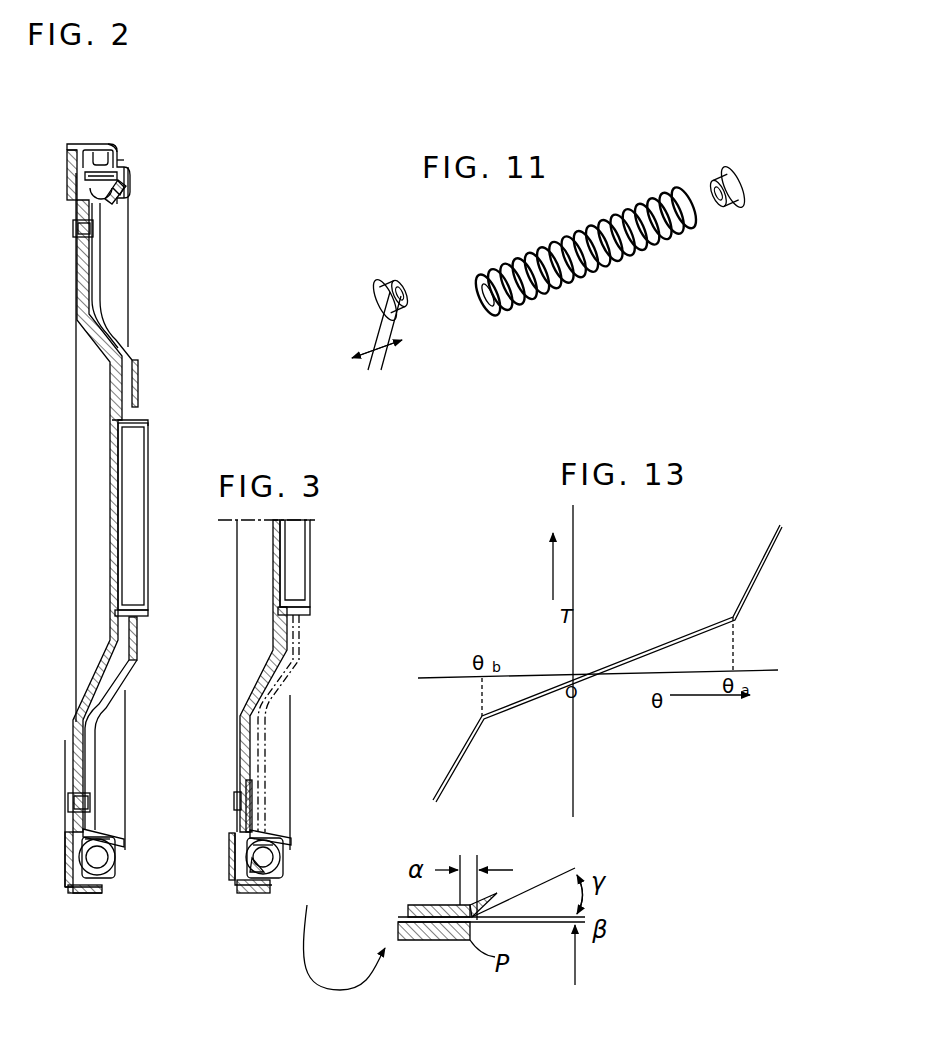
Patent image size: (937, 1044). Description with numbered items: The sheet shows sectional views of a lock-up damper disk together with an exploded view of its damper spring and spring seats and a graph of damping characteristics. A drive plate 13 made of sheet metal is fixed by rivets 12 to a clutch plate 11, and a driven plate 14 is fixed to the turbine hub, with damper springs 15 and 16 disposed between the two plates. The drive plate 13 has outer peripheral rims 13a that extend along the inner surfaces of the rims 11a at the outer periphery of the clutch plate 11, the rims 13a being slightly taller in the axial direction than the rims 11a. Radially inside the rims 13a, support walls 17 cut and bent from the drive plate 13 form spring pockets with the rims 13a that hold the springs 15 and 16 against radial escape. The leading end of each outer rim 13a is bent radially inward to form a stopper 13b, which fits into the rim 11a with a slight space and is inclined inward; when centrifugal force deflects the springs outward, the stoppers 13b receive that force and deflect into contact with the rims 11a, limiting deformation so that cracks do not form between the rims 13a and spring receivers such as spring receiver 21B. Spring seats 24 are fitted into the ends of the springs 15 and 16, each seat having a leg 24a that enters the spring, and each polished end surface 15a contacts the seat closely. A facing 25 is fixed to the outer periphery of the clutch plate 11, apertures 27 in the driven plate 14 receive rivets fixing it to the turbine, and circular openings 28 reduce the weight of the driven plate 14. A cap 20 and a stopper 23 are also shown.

In FIG. 2, the clutch plate 11 is at (80, 300).
In FIG. 3, the clutch plate 11 is at (238, 730).
In FIG. 2, the outer rim 11a is at (100, 145).
In FIG. 3, the outer rim 11a is at (260, 897).
In FIG. 2, the rivet 12 is at (71, 229).
In FIG. 3, the rivet 12 is at (234, 800).
In FIG. 2, the drive plate 13 is at (70, 155).
In FIG. 3, the drive plate 13 is at (240, 879).
In FIG. 2, the outer peripheral rim 13a is at (105, 883).
In FIG. 3, the outer peripheral rim 13a is at (250, 896).
In FIG. 3, the stopper 13b is at (285, 905).
In FIG. 2, the driven plate 14 is at (128, 204).
In FIG. 3, the driven plate 14 is at (270, 802).
In FIG. 2, the damper spring 15 is at (80, 895).
In FIG. 11, the damper spring 15 is at (571, 297).
In FIG. 11, the end surface 15a is at (484, 312).
In FIG. 3, the damper spring 16 is at (276, 862).
In FIG. 2, the support wall 17 is at (118, 187).
In FIG. 3, the support wall 17 is at (262, 838).
In FIG. 2, the cap 20 is at (128, 172).
In FIG. 2, the spring receiver 21B is at (116, 150).
In FIG. 2, the stopper 23 is at (90, 147).
In FIG. 3, the stopper 23 is at (283, 858).
In FIG. 2, the spring seat 24 is at (126, 162).
In FIG. 11, the spring seat 24 is at (387, 276).
In FIG. 11, the leg 24a is at (395, 320).
In FIG. 2, the facing 25 is at (67, 182).
In FIG. 3, the facing 25 is at (229, 848).
In FIG. 2, the aperture 27 is at (138, 378).
In FIG. 3, the aperture 27 is at (300, 650).
In FIG. 2, the circular opening 28 is at (103, 240).